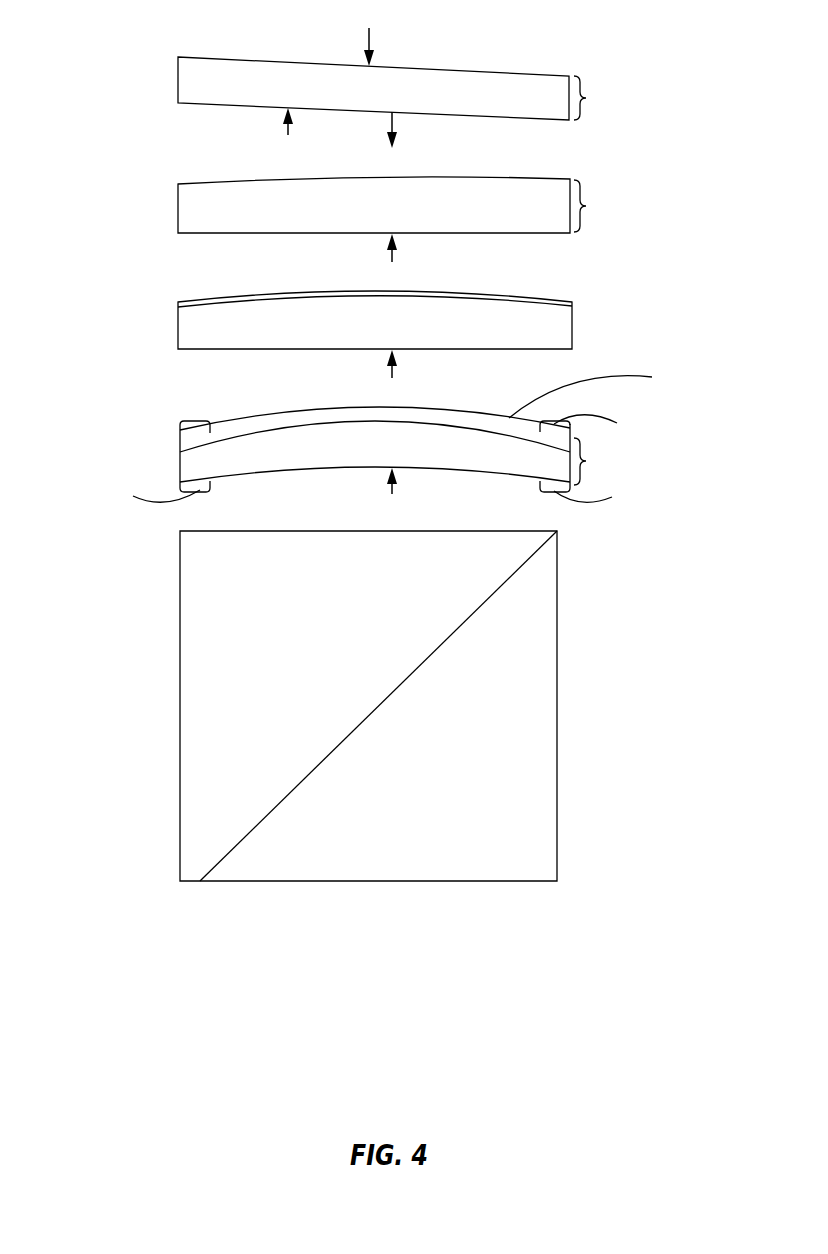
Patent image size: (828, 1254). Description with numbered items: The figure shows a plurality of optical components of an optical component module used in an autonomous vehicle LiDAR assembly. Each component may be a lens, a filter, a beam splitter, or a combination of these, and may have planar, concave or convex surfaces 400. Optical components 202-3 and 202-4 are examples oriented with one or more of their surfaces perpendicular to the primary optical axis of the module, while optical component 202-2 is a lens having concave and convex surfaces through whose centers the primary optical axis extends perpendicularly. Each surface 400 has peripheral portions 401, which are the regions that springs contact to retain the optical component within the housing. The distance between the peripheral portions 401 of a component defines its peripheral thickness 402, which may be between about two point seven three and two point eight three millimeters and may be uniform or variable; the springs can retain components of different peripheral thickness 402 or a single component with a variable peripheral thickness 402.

The optical component 202-2 is at (180, 465).
The optical component 202-3 is at (178, 326).
The optical component 202-4 is at (178, 214).
The surface 400 is at (486, 266).
The peripheral portion 401 is at (200, 424).
The peripheral thickness 402 is at (607, 280).